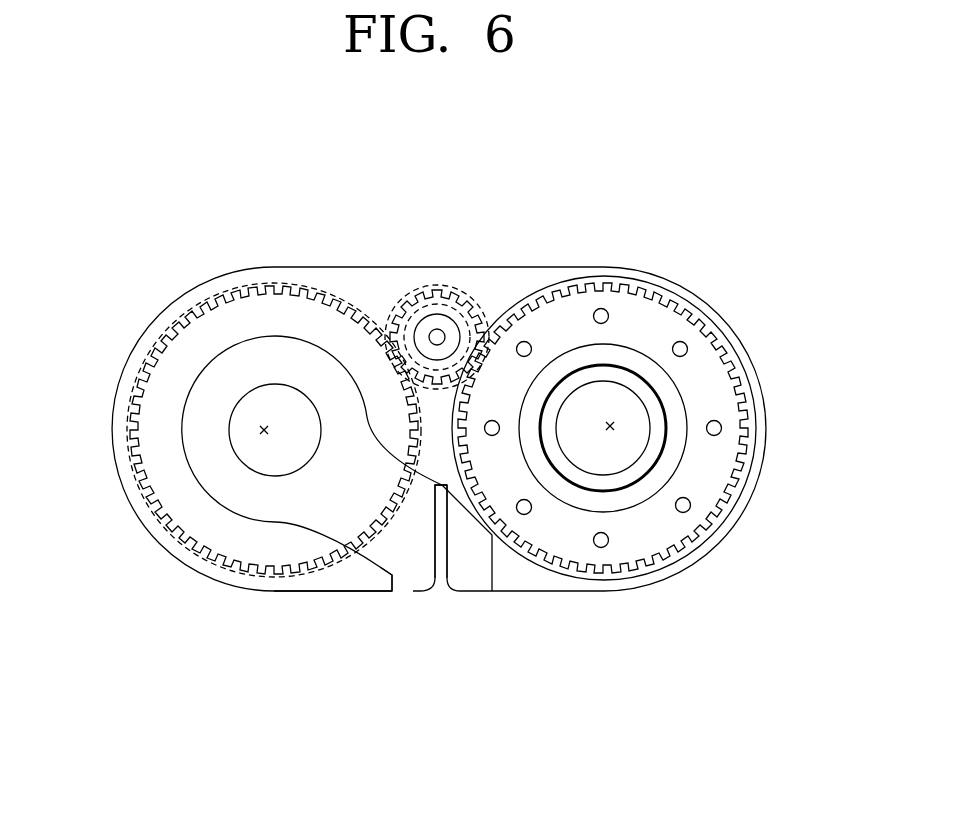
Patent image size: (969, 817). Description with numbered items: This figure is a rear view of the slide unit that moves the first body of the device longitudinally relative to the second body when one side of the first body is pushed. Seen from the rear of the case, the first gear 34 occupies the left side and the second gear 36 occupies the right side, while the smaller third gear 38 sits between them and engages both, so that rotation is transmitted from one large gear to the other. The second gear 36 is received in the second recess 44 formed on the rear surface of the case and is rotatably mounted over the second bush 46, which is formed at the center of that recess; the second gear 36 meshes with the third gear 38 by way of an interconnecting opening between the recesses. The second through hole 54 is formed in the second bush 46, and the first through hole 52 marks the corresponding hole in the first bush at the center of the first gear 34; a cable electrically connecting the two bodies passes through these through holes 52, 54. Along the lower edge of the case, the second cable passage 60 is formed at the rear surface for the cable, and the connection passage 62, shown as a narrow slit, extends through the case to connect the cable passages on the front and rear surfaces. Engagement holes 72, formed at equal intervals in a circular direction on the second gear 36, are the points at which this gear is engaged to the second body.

The first gear 34 is at (250, 306).
The second gear 36 is at (639, 387).
The third gear 38 is at (430, 322).
The second recess 44 is at (626, 283).
The second bush 46 is at (652, 400).
The first through hole 52 is at (264, 430).
The second through hole 54 is at (614, 426).
The second cable passage 60 is at (407, 565).
The connection passage 62 is at (440, 562).
The engagement holes 72 is at (688, 510).